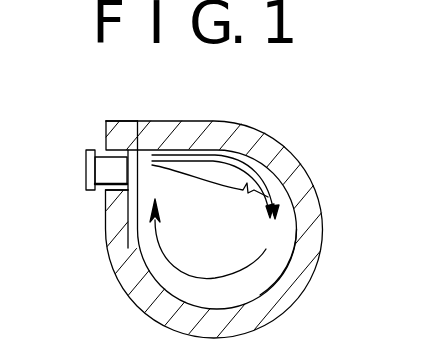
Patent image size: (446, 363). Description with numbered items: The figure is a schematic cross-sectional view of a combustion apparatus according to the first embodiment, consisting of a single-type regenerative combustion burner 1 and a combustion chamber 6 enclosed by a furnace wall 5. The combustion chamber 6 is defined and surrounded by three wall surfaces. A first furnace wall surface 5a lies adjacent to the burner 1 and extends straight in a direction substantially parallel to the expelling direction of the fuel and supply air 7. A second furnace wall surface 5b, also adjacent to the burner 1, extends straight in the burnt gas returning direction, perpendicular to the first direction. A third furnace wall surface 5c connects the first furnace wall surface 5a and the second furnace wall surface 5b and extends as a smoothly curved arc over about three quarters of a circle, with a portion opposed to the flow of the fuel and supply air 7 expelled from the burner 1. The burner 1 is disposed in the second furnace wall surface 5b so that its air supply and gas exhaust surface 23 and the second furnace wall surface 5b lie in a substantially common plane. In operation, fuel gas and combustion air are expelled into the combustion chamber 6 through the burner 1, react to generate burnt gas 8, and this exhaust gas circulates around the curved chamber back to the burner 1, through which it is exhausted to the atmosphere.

The single-type regenerative combustion burner 1 is at (88, 151).
The furnace wall 5 is at (310, 180).
The first furnace wall surface 5a is at (150, 159).
The second furnace wall surface 5b is at (137, 207).
The third furnace wall surface 5c is at (293, 258).
The combustion chamber 6 is at (247, 233).
The fuel and supply air 7 is at (180, 160).
The burnt gas 8 is at (133, 231).
The air supply and gas exhaust surface 23 is at (139, 173).